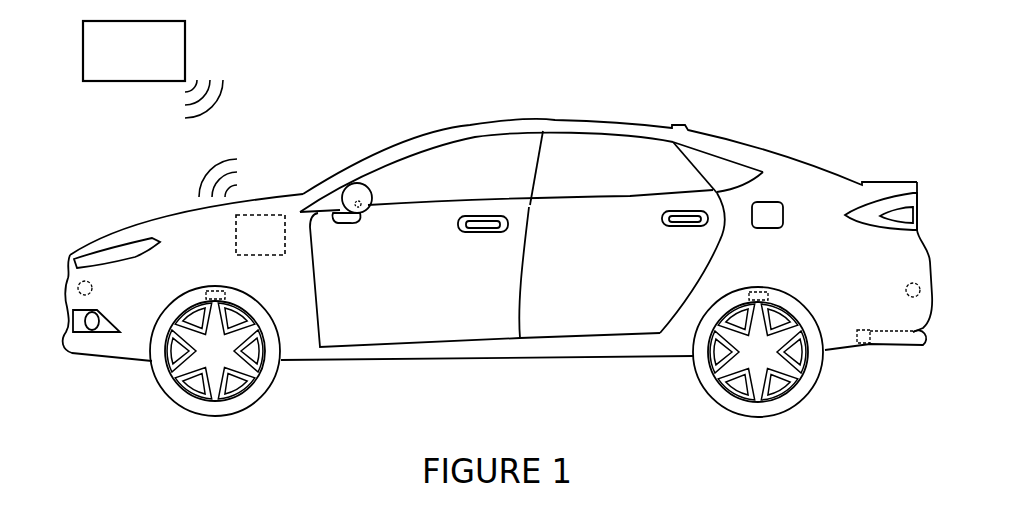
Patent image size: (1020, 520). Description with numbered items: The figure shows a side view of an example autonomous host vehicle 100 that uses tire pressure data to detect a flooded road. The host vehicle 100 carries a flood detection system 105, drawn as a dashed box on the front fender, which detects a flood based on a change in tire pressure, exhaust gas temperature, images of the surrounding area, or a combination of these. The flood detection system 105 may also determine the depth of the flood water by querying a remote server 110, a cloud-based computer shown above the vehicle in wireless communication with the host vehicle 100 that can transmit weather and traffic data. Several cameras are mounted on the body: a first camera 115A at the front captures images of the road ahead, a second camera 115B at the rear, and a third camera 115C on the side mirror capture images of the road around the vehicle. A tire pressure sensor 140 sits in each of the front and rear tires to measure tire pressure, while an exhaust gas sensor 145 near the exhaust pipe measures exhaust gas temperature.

The host vehicle 100 is at (553, 120).
The flood detection system 105 is at (261, 215).
The remote server 110 is at (82, 52).
The first camera 115A is at (78, 288).
The second camera 115B is at (905, 290).
The third camera 115C is at (373, 207).
The tire pressure sensor 140 is at (216, 291).
The exhaust gas sensor 145 is at (857, 336).